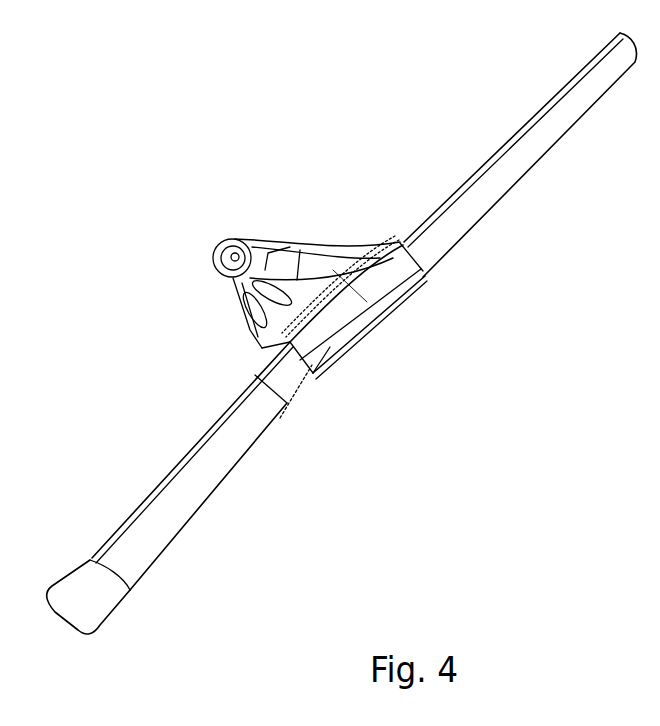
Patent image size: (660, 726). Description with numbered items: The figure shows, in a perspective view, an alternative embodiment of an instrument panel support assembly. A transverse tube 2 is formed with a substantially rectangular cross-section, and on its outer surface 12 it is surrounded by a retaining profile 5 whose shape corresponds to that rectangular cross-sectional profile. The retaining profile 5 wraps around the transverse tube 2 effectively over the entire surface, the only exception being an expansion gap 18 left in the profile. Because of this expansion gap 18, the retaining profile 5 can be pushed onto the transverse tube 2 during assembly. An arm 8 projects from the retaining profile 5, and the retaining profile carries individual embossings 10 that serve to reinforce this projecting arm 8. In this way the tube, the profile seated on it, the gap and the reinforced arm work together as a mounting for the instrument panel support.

The transverse tube 2 is at (192, 487).
The retaining profile 5 is at (377, 278).
The arm 8 is at (302, 288).
The embossings 10 is at (282, 292).
The outer surface 12 is at (225, 445).
The expansion gap 18 is at (337, 353).